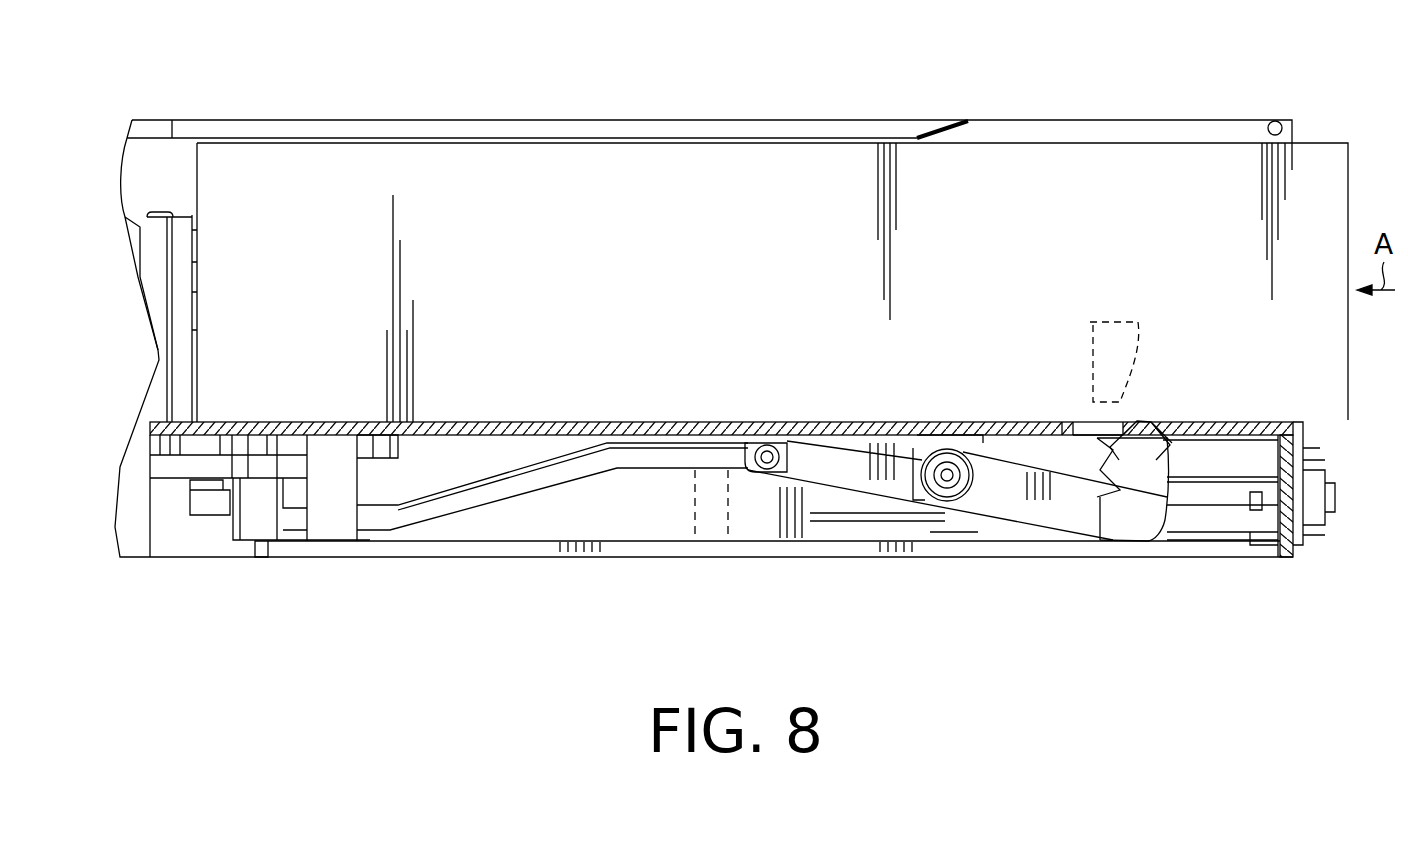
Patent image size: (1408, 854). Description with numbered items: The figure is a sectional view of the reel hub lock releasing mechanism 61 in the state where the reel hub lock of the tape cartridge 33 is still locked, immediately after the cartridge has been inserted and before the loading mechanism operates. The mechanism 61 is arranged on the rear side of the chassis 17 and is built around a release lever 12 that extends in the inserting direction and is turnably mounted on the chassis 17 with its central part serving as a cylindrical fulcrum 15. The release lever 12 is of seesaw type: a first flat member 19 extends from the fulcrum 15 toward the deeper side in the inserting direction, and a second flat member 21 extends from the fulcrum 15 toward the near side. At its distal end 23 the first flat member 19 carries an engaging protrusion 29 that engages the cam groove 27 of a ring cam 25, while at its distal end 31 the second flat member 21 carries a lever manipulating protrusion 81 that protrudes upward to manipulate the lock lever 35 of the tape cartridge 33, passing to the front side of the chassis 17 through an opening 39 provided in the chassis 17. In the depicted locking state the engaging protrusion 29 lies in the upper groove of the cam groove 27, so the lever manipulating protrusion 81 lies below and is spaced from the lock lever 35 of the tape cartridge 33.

The release lever 12 is at (1127, 510).
The fulcrum 15 is at (962, 505).
The chassis 17 is at (455, 430).
The first flat member 19 is at (833, 482).
The second flat member 21 is at (1060, 525).
The distal end 23 is at (760, 478).
The ring cam 25 is at (673, 502).
The cam groove 27 is at (537, 480).
The engaging protrusion 29 is at (745, 440).
The distal end 31 is at (1120, 542).
The tape cartridge 33 is at (1047, 172).
The lock lever 35 is at (1103, 322).
The opening 39 is at (1088, 428).
The reel hub lock releasing mechanism 61 is at (952, 532).
The lever manipulating protrusion 81 is at (1170, 427).